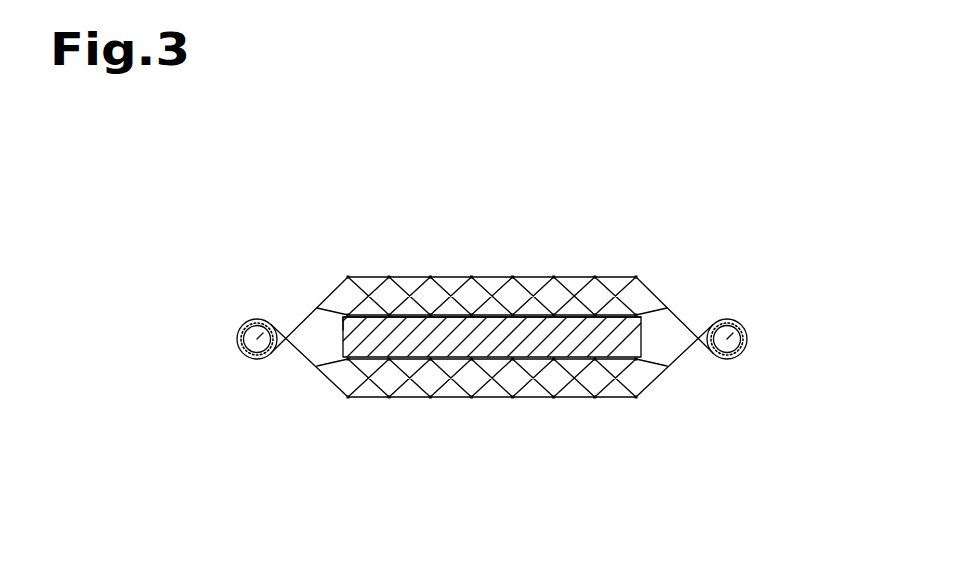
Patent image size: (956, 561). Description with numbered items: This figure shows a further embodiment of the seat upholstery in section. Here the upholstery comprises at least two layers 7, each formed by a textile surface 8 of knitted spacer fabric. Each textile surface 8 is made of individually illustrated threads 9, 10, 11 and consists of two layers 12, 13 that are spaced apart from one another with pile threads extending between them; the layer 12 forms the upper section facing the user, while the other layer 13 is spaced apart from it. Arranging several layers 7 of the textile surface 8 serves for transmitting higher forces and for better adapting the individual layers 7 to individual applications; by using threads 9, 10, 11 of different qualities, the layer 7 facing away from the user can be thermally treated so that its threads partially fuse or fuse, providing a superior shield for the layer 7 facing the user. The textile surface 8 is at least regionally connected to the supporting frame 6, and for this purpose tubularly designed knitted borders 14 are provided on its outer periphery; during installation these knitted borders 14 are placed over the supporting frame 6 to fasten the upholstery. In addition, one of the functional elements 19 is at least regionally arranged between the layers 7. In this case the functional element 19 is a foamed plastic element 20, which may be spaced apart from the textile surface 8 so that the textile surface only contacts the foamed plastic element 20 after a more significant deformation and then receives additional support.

The supporting frame 6 is at (242, 326).
The layer 7 is at (356, 250).
The textile surface 8 is at (533, 277).
The thread 9 is at (473, 279).
The thread 10 is at (437, 315).
The thread 11 is at (584, 386).
The layer 12 is at (413, 270).
The layer 13 is at (355, 321).
The knitted border 14 is at (266, 326).
The functional element 19 is at (659, 322).
The foamed plastic element 20 is at (651, 291).